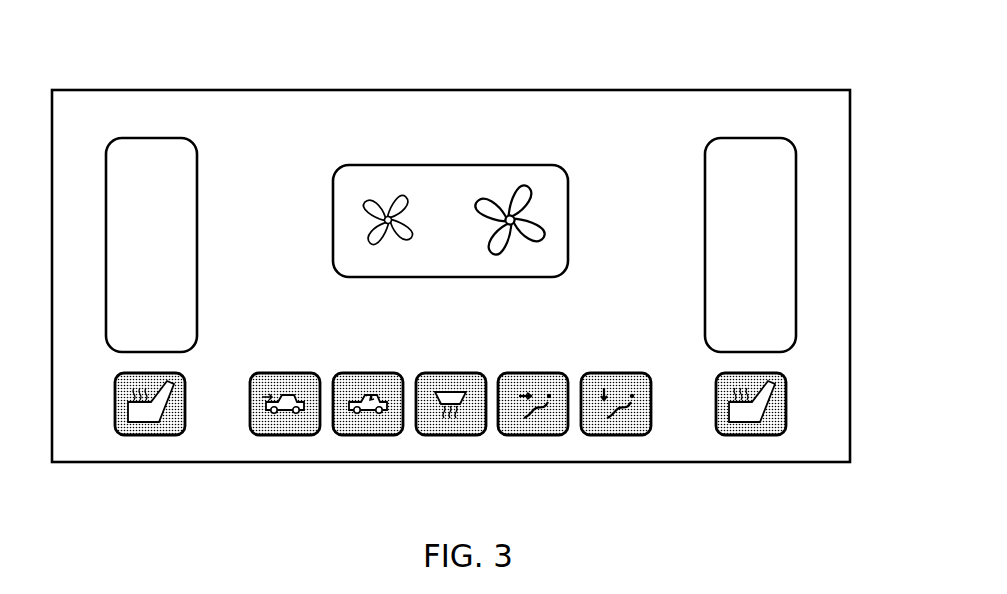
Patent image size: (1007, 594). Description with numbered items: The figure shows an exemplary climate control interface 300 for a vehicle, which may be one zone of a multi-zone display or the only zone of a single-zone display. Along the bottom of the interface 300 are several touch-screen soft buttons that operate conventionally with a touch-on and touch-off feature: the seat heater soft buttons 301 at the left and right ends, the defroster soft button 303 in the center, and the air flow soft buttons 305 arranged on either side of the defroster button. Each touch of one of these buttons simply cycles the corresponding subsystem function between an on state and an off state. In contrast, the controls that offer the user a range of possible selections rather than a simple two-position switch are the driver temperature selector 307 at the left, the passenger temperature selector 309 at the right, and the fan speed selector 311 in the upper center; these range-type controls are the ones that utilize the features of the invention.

The climate control interface 300 is at (768, 62).
The seat heater soft buttons 301 is at (150, 437).
The defroster soft button 303 is at (452, 373).
The air flow soft buttons 305 is at (368, 435).
The driver temperature selector 307 is at (197, 290).
The passenger temperature selector 309 is at (705, 298).
The fan speed selector 311 is at (472, 277).